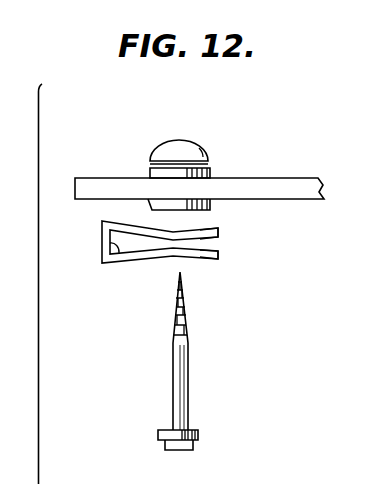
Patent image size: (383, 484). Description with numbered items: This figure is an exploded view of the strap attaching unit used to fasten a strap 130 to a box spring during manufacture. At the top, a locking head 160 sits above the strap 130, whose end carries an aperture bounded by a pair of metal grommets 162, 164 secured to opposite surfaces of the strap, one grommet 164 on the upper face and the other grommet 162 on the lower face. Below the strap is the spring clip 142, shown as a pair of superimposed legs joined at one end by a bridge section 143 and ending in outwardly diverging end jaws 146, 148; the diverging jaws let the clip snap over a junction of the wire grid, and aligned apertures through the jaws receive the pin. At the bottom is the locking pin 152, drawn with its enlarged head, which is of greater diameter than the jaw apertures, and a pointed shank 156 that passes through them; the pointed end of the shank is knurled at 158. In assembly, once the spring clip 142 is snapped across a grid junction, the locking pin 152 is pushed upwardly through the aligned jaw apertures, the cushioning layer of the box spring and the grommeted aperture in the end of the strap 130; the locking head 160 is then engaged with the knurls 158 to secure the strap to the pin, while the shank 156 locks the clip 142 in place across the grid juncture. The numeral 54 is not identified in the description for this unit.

The strap 130 is at (270, 188).
The locking head 160 is at (183, 148).
The metal grommet 164 is at (152, 173).
The metal grommet 162 is at (150, 203).
The spring clip 142 is at (102, 232).
The bridge section 143 is at (118, 253).
The end jaw 146 is at (220, 229).
The end jaw 148 is at (221, 257).
The knurls 158 is at (175, 305).
The locking pin 152 is at (173, 367).
The pointed shank 156 is at (182, 355).
The screw head 54 is at (160, 436).